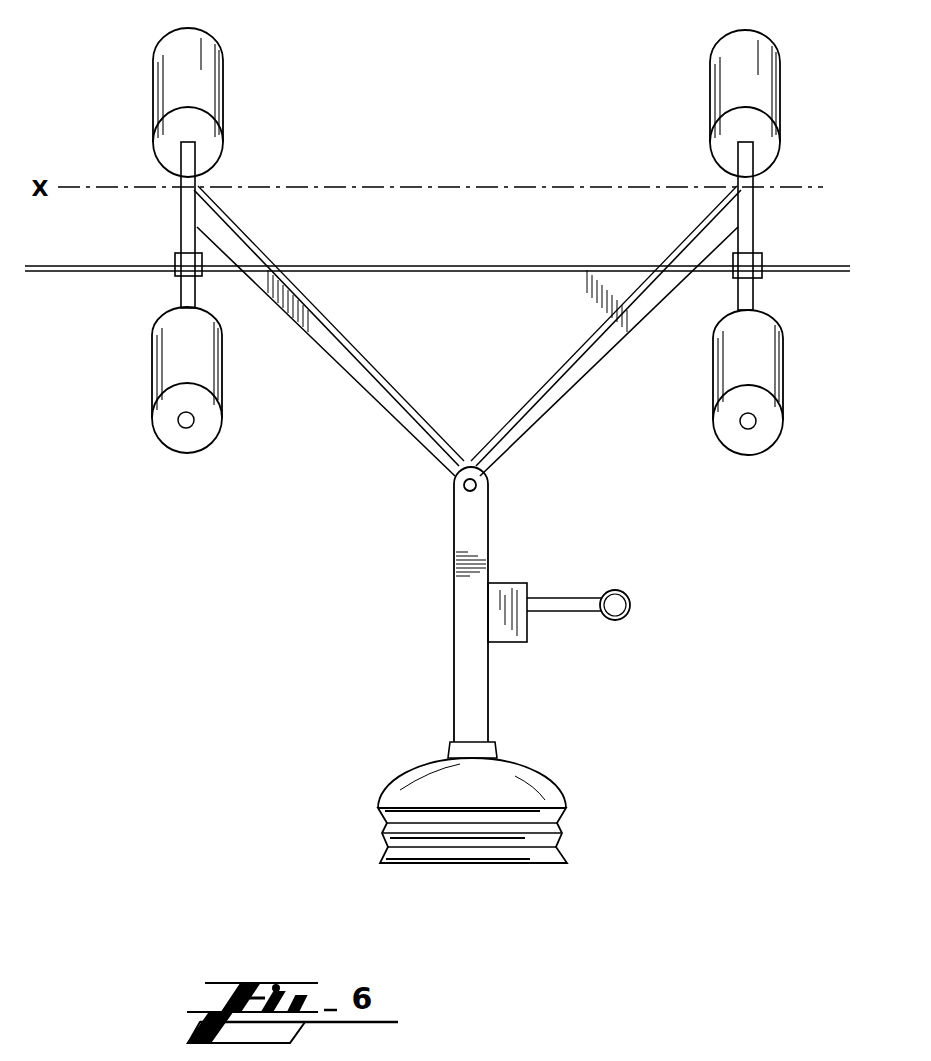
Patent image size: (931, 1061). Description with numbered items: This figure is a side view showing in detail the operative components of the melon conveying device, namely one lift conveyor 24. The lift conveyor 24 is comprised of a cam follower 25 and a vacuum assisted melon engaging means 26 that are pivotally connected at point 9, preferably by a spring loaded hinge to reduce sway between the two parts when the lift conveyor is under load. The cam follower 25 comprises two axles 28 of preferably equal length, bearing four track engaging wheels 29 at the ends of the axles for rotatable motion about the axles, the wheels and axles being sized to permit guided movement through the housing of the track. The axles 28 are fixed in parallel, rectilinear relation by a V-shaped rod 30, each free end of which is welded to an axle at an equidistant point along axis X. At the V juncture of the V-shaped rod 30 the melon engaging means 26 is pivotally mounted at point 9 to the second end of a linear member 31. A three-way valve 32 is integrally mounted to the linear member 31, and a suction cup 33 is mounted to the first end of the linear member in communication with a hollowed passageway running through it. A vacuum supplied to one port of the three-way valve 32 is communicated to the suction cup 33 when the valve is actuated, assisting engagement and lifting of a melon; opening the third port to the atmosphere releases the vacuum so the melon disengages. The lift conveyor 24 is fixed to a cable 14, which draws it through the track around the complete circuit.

The pivotal connection point 9 is at (492, 493).
The cable 14 is at (65, 274).
The lift conveyor 24 is at (467, 383).
The cam follower 25 is at (467, 331).
The melon engaging means 26 is at (454, 643).
The axles 28 is at (185, 212).
The track engaging wheels 29 is at (222, 104).
The V-shaped rod 30 is at (376, 386).
The linear member 31 is at (453, 523).
The three-way valve 32 is at (513, 642).
The suction cup 33 is at (527, 788).